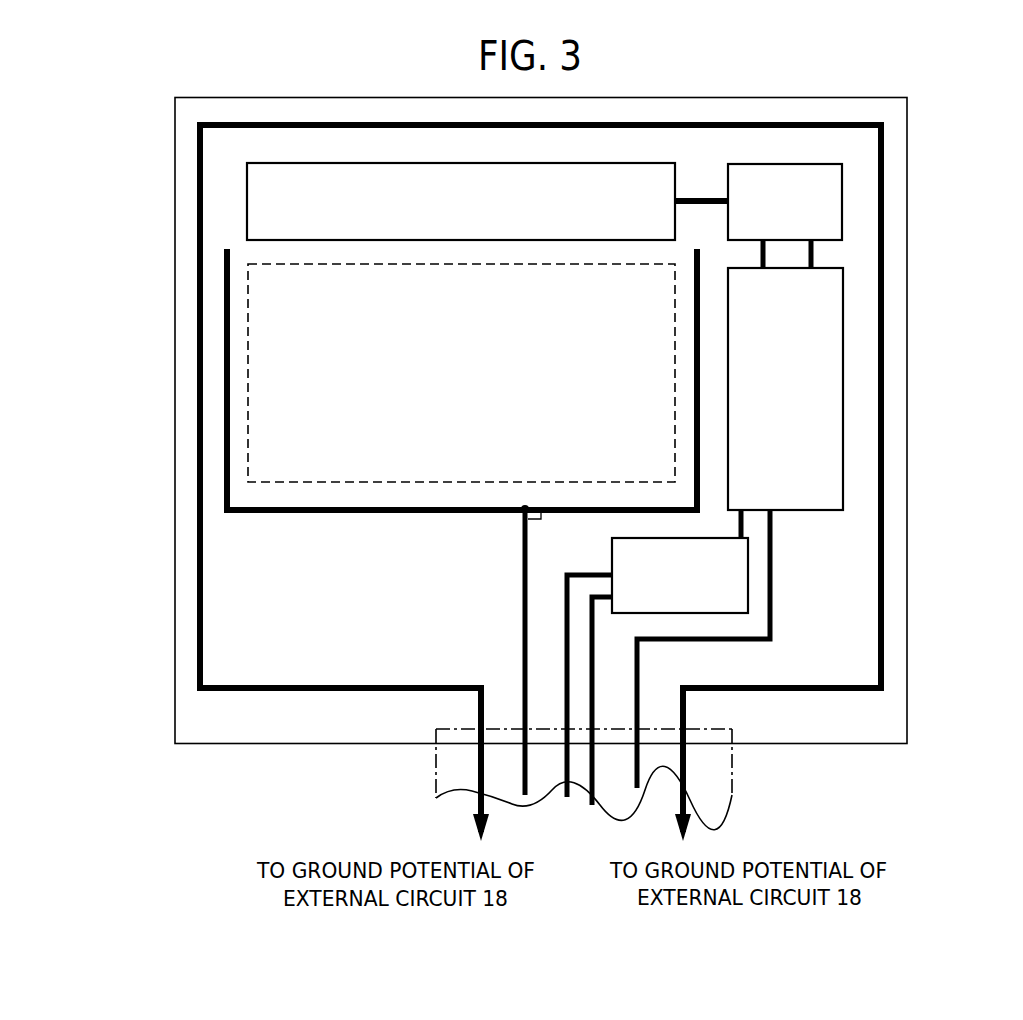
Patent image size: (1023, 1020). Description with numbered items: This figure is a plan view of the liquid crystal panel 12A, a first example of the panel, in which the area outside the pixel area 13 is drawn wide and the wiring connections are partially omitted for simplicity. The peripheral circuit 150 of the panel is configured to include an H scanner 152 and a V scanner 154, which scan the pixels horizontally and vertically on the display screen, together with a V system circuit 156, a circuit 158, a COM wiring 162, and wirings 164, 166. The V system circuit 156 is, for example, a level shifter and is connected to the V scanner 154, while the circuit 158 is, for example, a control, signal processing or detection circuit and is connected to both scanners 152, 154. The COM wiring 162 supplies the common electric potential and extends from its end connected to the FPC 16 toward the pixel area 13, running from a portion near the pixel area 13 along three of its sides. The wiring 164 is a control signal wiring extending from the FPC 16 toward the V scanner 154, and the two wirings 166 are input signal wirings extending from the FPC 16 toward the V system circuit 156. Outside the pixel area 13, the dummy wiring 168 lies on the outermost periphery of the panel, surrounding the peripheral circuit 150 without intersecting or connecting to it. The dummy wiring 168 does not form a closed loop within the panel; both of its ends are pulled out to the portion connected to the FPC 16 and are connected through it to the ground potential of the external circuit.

The liquid crystal panel 12A is at (172, 140).
The pixel area 13 is at (288, 484).
The FPC 16 is at (436, 783).
The peripheral circuit 150 is at (494, 483).
The H scanner 152 is at (247, 202).
The V scanner 154 is at (845, 375).
The V system circuit 156 is at (722, 613).
The circuit 158 is at (842, 203).
The COM wiring 162 is at (522, 548).
The wiring 164 is at (772, 582).
The wiring 166 is at (567, 590).
The dummy wiring 168 is at (245, 692).